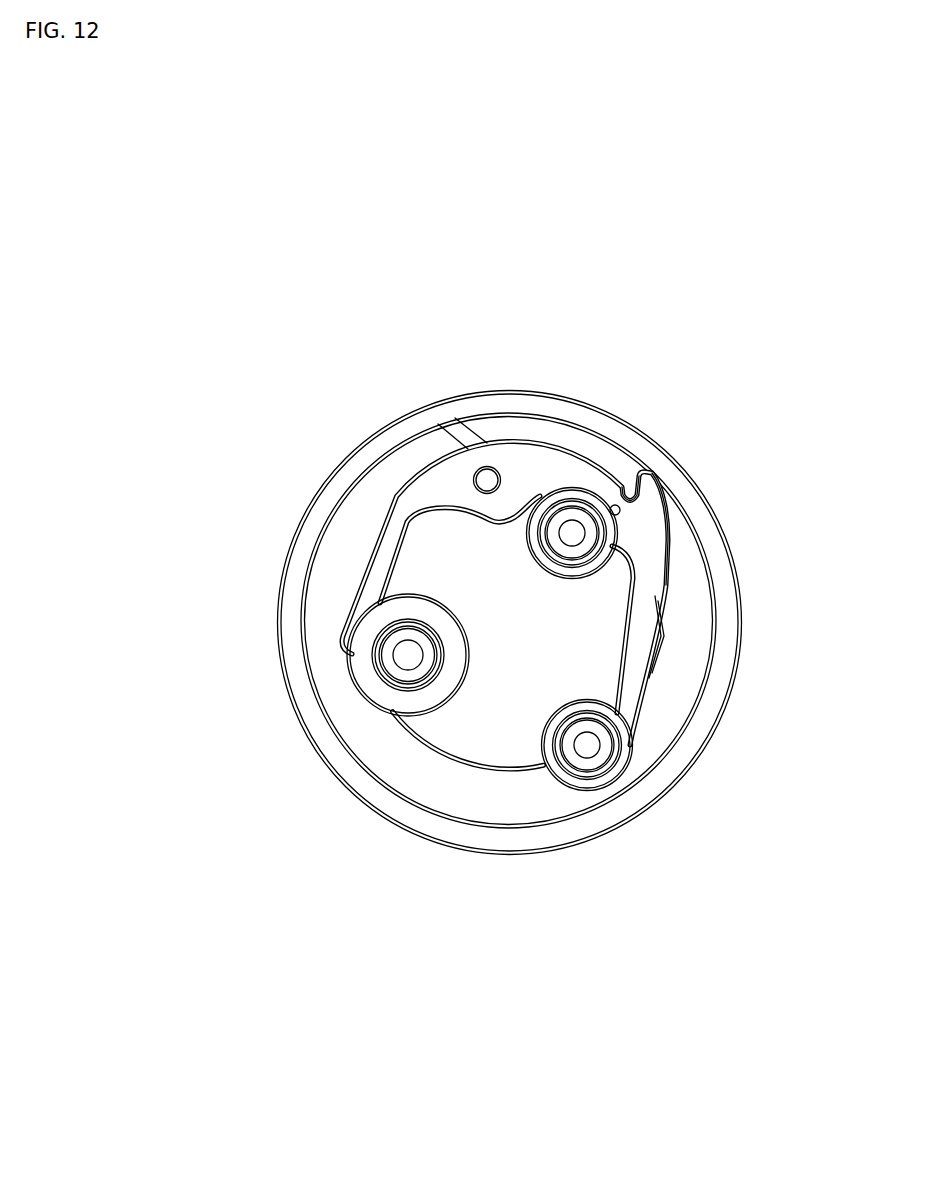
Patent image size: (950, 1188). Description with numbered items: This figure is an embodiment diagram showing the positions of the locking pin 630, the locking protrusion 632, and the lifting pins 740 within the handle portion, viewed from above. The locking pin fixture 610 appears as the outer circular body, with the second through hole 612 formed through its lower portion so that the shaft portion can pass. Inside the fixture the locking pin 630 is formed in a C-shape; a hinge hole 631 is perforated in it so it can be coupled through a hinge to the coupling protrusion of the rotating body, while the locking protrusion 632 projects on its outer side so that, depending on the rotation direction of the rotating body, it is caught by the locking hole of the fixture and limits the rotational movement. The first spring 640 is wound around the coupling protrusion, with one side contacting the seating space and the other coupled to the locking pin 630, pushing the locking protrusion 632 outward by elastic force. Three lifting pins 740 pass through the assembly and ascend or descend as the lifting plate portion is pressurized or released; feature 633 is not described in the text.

The locking pin fixture 610 is at (292, 610).
The second through hole 612 is at (513, 633).
The locking pin 630 is at (553, 472).
The hinge hole 631 is at (487, 480).
The locking protrusion 632 is at (655, 495).
The notch 633 is at (632, 487).
The first spring 640 is at (465, 440).
The lifting pin 740 is at (408, 655).